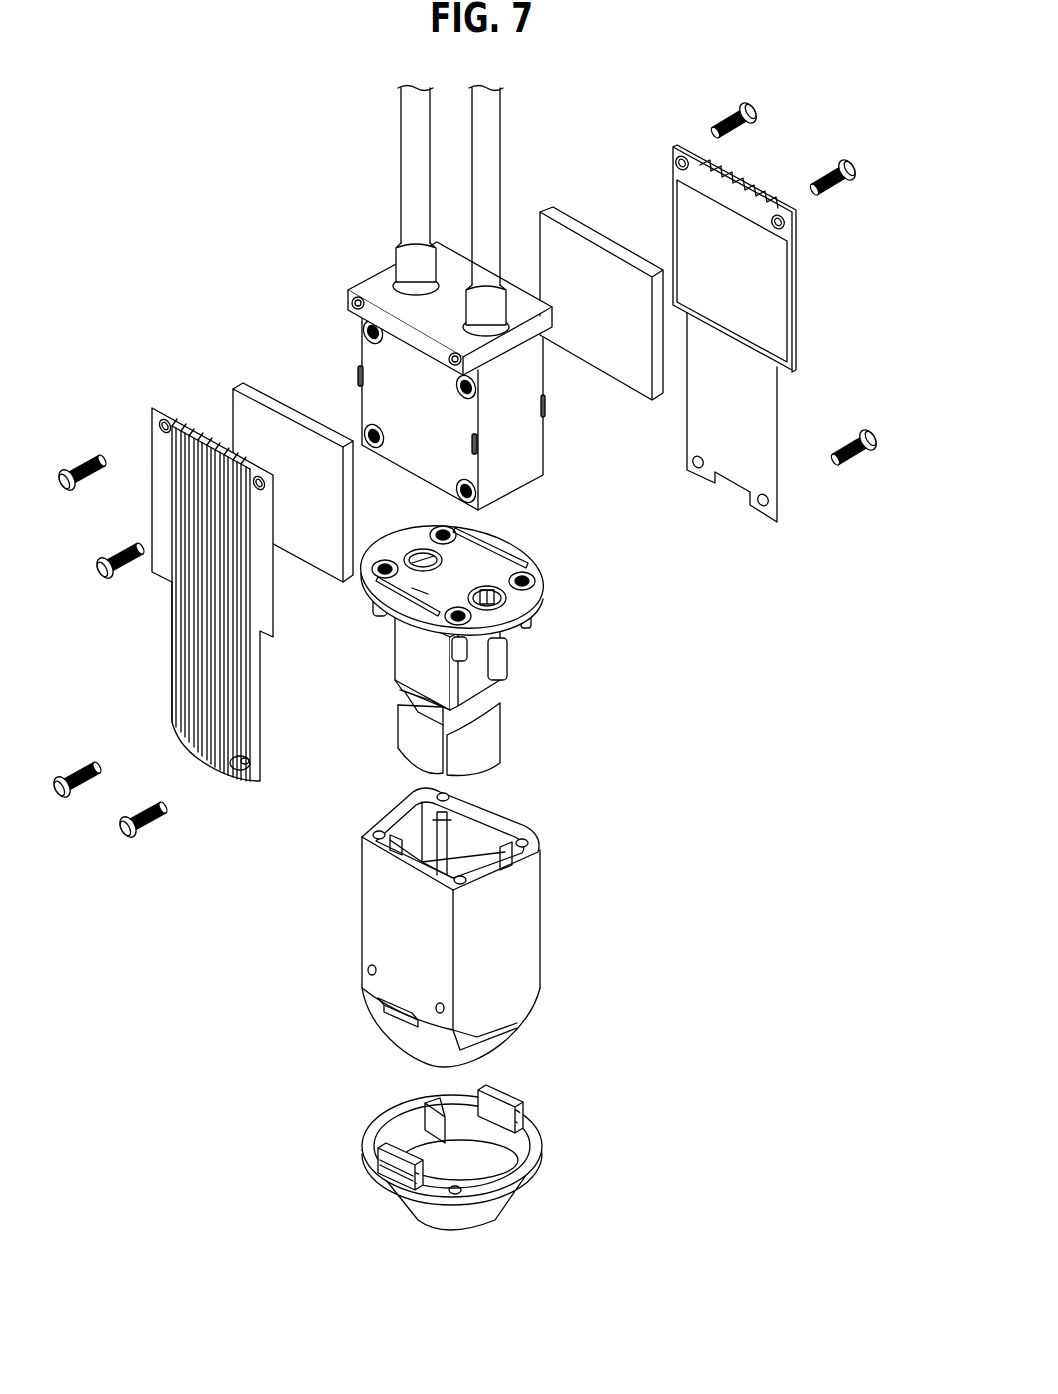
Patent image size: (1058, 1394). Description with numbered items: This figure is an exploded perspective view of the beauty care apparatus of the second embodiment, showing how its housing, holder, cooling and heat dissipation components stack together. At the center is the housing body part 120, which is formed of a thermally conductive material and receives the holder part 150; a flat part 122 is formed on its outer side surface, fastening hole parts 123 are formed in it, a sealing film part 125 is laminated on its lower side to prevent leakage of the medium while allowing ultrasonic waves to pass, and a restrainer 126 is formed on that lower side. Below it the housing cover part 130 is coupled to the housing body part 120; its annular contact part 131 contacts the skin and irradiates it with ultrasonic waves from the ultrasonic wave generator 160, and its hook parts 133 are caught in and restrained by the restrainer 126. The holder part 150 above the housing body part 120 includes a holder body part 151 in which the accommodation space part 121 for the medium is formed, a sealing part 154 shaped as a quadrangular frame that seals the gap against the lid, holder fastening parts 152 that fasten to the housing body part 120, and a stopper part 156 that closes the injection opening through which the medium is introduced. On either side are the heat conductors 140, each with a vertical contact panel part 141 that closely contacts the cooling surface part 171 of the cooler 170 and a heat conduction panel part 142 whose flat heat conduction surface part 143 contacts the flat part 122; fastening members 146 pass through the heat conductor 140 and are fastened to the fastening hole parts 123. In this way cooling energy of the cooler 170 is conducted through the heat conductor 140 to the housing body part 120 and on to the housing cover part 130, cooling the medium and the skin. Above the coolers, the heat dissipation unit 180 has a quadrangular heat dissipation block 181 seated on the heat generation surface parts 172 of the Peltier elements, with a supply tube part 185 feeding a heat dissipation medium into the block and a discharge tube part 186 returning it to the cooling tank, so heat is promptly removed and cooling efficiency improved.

The housing body part 120 is at (415, 926).
The accommodation space part 121 is at (473, 845).
The flat part 122 is at (388, 922).
The fastening hole part 123 is at (436, 1009).
The sealing film part 125 is at (420, 1055).
The restrainer 126 is at (363, 975).
The housing cover part 130 is at (401, 1167).
The contact part 131 is at (445, 1235).
The hook part 133 is at (383, 1160).
The heat conductor 140 is at (484, 452).
The contact panel part 141 is at (206, 493).
The heat conduction panel part 142 is at (194, 715).
The heat conduction surface part 143 is at (735, 260).
The fastening member 146 is at (85, 462).
The holder part 150 is at (479, 638).
The holder body part 151 is at (417, 663).
The holder fastening part 152 is at (541, 576).
The sealing part 154 is at (540, 600).
The stopper part 156 is at (495, 590).
The ultrasonic wave generator 160 is at (487, 733).
The cooler 170 is at (404, 344).
The cooling surface part 171 is at (250, 420).
The heat generation surface part 172 is at (288, 407).
The heat dissipation unit 180 is at (392, 361).
The heat dissipation block 181 is at (375, 288).
The supply tube part 185 is at (417, 168).
The discharge tube part 186 is at (487, 203).